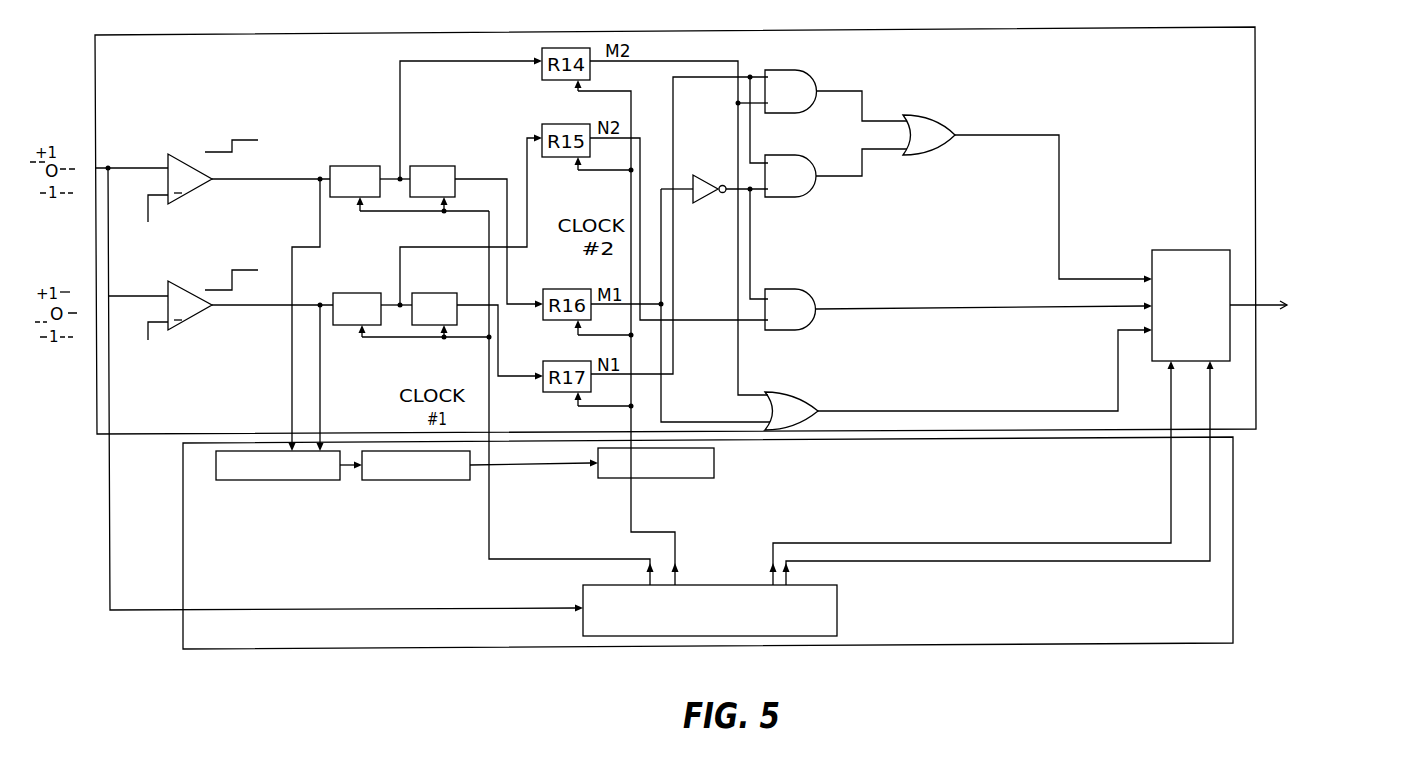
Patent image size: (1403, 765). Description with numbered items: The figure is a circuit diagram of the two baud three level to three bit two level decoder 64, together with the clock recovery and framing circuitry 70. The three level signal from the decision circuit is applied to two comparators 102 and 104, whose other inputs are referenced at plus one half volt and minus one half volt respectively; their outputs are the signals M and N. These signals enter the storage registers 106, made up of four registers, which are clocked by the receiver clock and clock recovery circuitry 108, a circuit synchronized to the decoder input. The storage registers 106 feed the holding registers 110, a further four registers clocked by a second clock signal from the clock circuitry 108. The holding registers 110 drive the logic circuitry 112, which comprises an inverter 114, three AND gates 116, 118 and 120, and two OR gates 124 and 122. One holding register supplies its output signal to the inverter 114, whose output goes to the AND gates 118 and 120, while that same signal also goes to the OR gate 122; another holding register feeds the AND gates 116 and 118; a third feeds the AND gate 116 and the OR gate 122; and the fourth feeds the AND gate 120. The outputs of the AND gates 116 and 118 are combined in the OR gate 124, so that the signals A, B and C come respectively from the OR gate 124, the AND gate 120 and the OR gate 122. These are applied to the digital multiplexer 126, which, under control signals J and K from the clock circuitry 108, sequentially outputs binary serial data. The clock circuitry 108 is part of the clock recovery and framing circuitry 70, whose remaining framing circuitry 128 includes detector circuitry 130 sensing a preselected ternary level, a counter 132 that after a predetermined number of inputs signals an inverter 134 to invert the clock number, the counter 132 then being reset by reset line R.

The three-to-two level decoder 64 is at (233, 420).
The clock recovery and framing circuitry 70 is at (320, 587).
The comparator 102 is at (183, 156).
The comparator 104 is at (195, 318).
The storage registers 106 is at (372, 135).
The receiver clock and clock recovery circuitry 108 is at (837, 617).
The holding registers 110 is at (587, 29).
The logic circuitry 112 is at (836, 119).
The inverter 114 is at (712, 153).
The AND gate 116 is at (798, 102).
The AND gate 118 is at (798, 187).
The AND gate 120 is at (807, 319).
The OR gate 122 is at (826, 390).
The OR gate 124 is at (955, 95).
The digital multiplexer 126 is at (1200, 312).
The framing circuitry 128 is at (455, 495).
The detector circuitry 130 is at (226, 481).
The counter 132 is at (358, 481).
The inverter 134 is at (613, 480).